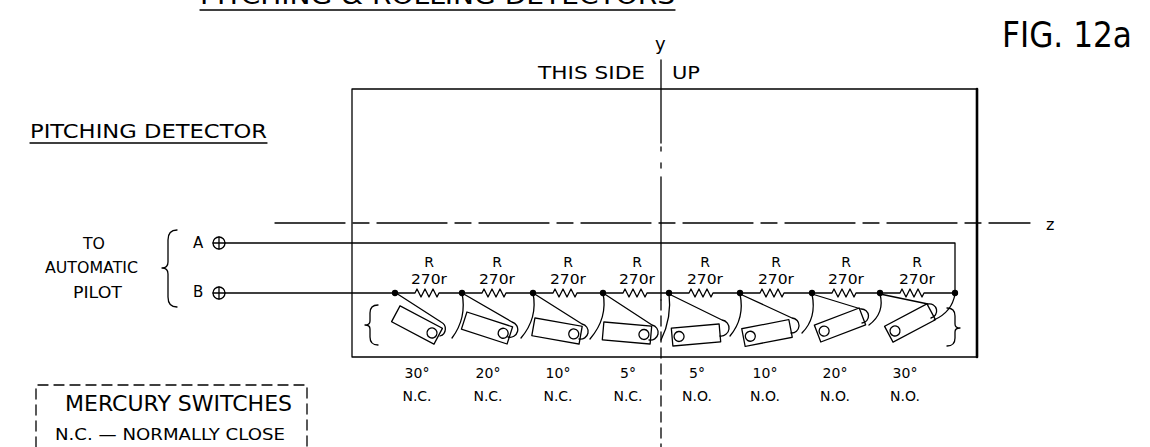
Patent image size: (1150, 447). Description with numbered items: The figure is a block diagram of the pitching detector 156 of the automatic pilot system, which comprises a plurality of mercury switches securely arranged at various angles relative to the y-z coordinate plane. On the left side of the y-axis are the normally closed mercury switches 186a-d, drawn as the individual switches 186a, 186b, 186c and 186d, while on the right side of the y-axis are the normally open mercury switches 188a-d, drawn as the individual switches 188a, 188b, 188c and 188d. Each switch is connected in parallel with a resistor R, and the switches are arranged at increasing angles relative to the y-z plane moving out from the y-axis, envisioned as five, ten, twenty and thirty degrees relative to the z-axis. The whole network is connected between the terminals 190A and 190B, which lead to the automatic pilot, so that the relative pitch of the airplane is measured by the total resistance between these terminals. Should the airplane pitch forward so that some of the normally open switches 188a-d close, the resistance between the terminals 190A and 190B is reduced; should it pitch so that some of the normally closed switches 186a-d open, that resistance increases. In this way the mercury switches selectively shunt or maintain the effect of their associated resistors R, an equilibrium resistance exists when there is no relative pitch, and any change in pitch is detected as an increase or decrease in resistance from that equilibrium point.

The pitching detector 156 is at (978, 143).
The terminal 190A is at (221, 237).
The terminal 190B is at (222, 299).
The normally closed mercury switches 186a-d is at (365, 325).
The normally closed mercury switch 186a is at (622, 340).
The normally closed mercury switch 186b is at (548, 335).
The normally closed mercury switch 186c is at (480, 330).
The normally closed mercury switch 186d is at (407, 325).
The normally open mercury switches 188a-d is at (957, 328).
The normally open mercury switch 188a is at (705, 338).
The normally open mercury switch 188b is at (775, 337).
The normally open mercury switch 188c is at (842, 333).
The normally open mercury switch 188d is at (915, 328).